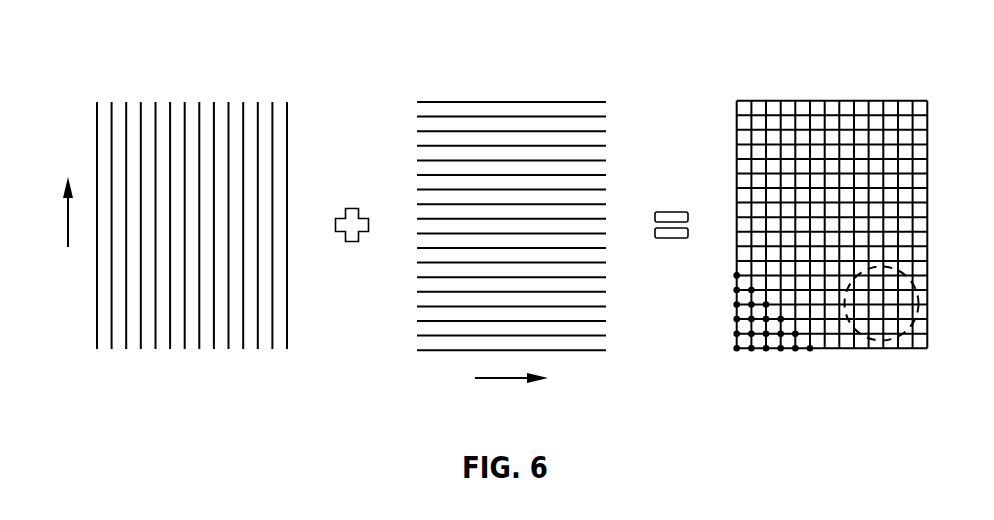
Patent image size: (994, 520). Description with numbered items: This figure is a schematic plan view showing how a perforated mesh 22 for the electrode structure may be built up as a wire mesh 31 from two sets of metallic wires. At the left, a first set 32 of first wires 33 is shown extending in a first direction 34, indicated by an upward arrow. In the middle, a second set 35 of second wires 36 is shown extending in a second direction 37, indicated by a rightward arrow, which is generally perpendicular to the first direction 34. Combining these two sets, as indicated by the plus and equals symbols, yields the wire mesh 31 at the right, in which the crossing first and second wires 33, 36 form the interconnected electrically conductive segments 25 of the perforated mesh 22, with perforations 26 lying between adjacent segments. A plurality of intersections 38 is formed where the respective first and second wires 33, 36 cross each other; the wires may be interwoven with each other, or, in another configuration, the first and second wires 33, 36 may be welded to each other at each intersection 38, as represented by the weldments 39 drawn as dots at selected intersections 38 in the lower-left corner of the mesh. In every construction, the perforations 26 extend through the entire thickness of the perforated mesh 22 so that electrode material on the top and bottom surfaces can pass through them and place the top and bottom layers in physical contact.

The perforated mesh 22 is at (799, 217).
The interconnected electrically conductive segments 25 is at (737, 87).
The perforations 26 is at (742, 152).
The wire mesh 31 is at (512, 217).
The first set 32 is at (192, 185).
The first wires 33 is at (97, 87).
The first direction 34 is at (67, 220).
The second set 35 is at (511, 185).
The second wires 36 is at (417, 87).
The second direction 37 is at (505, 380).
The intersections 38 is at (813, 343).
The weldments 39 is at (752, 350).